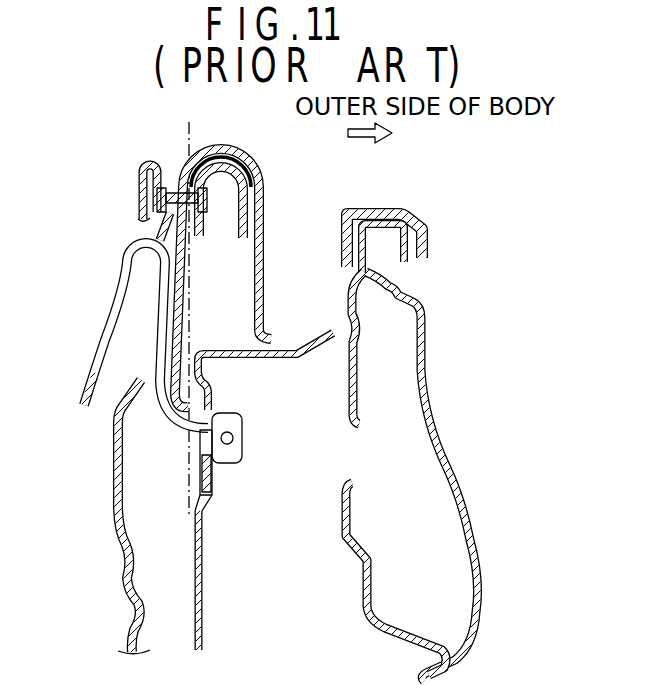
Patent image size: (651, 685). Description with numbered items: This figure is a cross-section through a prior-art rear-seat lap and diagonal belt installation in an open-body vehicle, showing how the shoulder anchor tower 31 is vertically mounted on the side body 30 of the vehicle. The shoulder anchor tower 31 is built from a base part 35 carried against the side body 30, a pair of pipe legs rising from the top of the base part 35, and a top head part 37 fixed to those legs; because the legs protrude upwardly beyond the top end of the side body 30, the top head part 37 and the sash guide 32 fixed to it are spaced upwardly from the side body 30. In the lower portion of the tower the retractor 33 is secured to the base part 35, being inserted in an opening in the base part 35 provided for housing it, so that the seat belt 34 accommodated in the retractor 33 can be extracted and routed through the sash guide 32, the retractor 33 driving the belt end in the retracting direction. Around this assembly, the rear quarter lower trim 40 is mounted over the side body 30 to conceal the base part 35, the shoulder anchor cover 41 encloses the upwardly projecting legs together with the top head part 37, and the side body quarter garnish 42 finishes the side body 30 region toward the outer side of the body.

The side body 30 is at (433, 374).
The shoulder anchor tower 31 is at (244, 162).
The sash guide 32 is at (166, 162).
The retractor 33 is at (236, 456).
The seat belt 34 is at (108, 330).
The base part 35 is at (207, 590).
The top head part 37 is at (214, 146).
The rear quarter lower trim 40 is at (113, 498).
The shoulder anchor cover 41 is at (262, 222).
The side body quarter garnish 42 is at (376, 205).